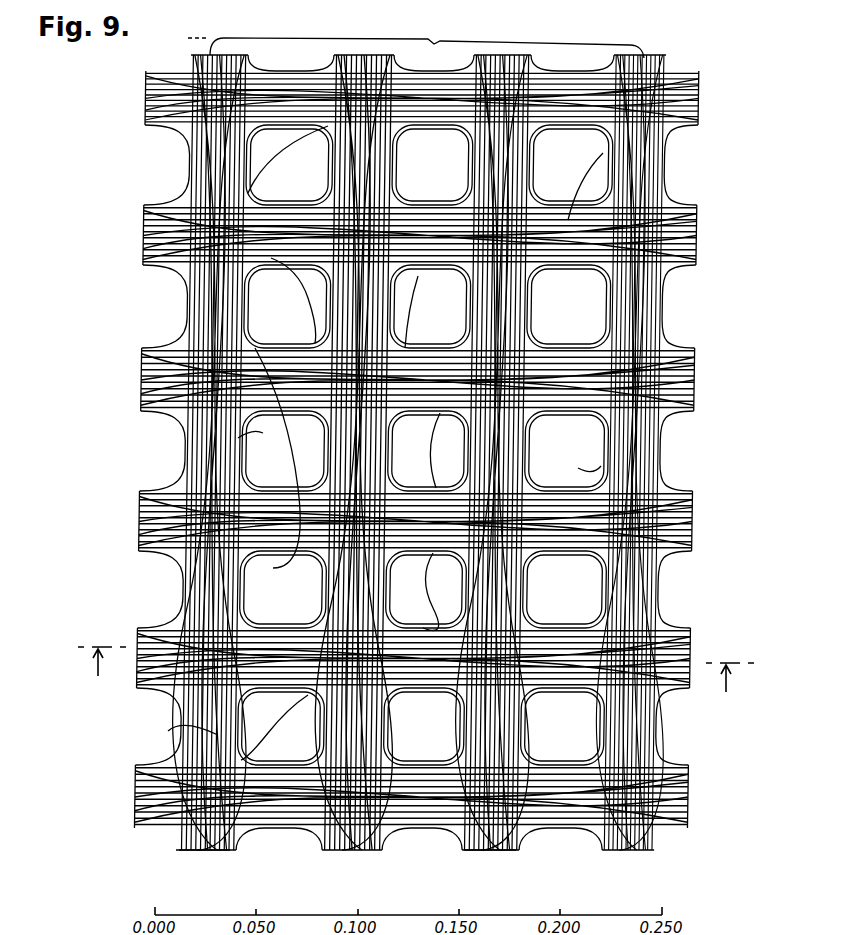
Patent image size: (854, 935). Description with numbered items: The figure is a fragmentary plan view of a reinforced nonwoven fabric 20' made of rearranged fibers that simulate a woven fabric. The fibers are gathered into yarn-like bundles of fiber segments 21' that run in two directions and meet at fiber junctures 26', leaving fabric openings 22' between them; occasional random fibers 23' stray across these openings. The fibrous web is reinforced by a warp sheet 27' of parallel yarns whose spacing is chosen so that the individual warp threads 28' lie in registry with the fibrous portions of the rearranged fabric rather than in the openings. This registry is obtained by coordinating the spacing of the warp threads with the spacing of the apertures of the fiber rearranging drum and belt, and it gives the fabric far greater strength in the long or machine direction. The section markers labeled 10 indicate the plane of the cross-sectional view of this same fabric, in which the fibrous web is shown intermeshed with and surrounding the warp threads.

The reinforced nonwoven fabric 20' is at (424, 449).
The yarn-like bundles of fiber segments 21' is at (427, 452).
The fabric openings 22' is at (502, 445).
The random fibers 23' is at (385, 443).
The fiber junctures 26' is at (452, 464).
The warp sheet 27' is at (416, 38).
The warp threads 28' is at (347, 864).
The section line for FIG. 10 is at (416, 655).